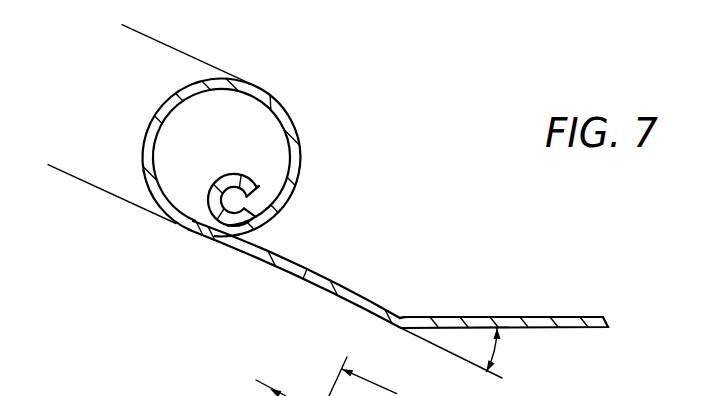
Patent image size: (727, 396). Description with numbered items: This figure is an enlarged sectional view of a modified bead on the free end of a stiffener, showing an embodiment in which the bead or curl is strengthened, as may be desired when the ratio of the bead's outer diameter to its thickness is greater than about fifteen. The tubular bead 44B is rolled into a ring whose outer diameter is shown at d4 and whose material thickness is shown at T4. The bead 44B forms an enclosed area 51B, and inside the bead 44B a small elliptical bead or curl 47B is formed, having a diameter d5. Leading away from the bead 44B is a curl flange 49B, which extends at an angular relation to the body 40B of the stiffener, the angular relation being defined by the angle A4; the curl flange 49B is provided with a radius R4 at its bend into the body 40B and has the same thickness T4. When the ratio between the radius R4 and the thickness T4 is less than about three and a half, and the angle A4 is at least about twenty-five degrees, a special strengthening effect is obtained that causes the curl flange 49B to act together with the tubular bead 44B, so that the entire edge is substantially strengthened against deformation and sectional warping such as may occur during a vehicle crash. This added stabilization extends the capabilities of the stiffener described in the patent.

The bead 44B is at (291, 115).
The enclosed area 51B is at (262, 143).
The small elliptical bead or curl 47B is at (196, 199).
The body 40B is at (558, 316).
The curl flange 49B is at (346, 300).
The outer diameter of bead d4 is at (137, 32).
The diameter of curl d5 is at (215, 235).
The thickness T4 is at (293, 301).
The radius of curl flange R4 is at (403, 314).
The angle A4 is at (496, 350).